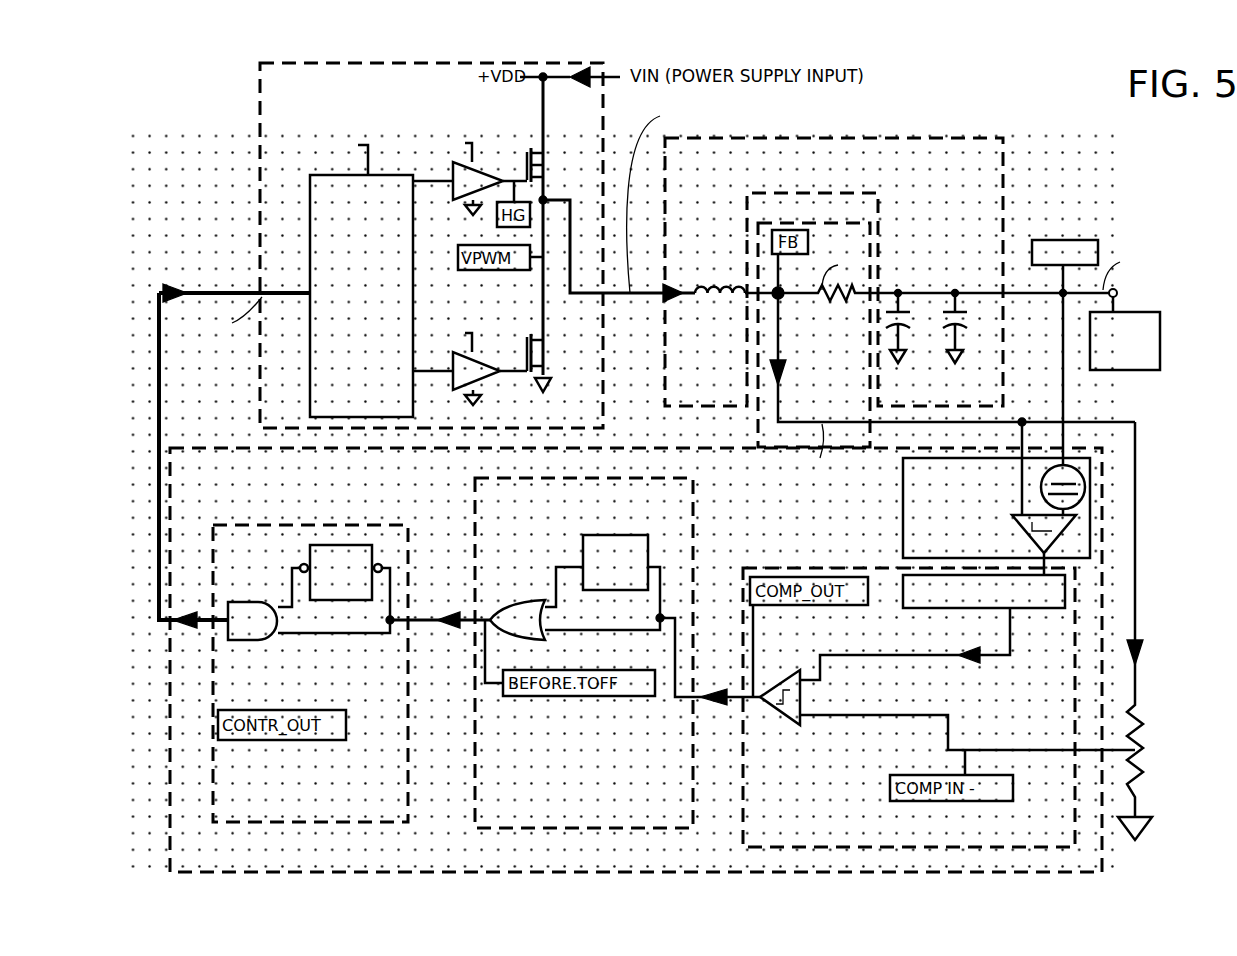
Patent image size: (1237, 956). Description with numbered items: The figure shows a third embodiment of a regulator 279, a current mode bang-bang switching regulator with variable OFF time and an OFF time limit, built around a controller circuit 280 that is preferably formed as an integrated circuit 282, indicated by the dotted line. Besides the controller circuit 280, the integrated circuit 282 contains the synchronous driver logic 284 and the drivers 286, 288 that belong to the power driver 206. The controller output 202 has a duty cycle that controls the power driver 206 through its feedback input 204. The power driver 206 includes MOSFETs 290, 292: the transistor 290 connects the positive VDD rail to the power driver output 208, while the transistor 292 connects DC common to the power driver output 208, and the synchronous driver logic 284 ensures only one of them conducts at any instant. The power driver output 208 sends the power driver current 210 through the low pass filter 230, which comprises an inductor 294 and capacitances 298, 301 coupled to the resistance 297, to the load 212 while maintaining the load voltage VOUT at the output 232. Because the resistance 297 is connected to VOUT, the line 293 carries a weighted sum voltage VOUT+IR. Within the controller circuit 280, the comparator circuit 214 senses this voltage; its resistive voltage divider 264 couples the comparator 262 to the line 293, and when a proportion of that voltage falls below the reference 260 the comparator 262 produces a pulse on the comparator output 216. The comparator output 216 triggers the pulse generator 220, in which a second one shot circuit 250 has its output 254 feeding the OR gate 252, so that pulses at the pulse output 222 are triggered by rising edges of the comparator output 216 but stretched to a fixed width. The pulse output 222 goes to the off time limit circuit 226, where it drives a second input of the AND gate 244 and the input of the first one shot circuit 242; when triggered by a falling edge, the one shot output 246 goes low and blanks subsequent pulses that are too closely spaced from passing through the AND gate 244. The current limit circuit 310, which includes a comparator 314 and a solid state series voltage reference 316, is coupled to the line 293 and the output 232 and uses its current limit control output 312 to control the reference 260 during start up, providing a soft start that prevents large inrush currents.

The regulator 279 is at (1115, 170).
The integrated circuit 282 is at (232, 125).
The power driver 206 is at (304, 93).
The synchronous driver logic 284 is at (378, 229).
The driver 286 is at (472, 214).
The driver 288 is at (478, 333).
The MOSFET 290 is at (530, 148).
The MOSFET 292 is at (540, 350).
The feedback input 204 is at (308, 296).
The power driver output 208 is at (632, 300).
The low pass filter 230 is at (846, 168).
The power driver current 210 is at (680, 265).
The inductor 294 is at (712, 298).
The resistance 297 is at (840, 300).
The line 293 is at (848, 420).
The capacitance 298 is at (900, 288).
The capacitance 301 is at (928, 340).
The load voltage output 232 is at (1022, 290).
The load 212 is at (1141, 352).
The controller circuit 280 is at (272, 450).
The off time limit circuit 226 is at (384, 678).
The first one shot circuit 242 is at (353, 544).
The output of the first one shot circuit 246 is at (298, 566).
The AND gate 244 is at (257, 642).
The controller output 202 is at (193, 628).
The pulse output 222 is at (443, 628).
The pulse generator 220 is at (617, 748).
The second one shot circuit 250 is at (600, 533).
The output of the second one shot circuit 254 is at (583, 568).
The OR gate 252 is at (527, 598).
The comparator output 216 is at (720, 700).
The comparator circuit 214 is at (872, 694).
The comparator 262 is at (778, 680).
The current limit circuit 310 is at (903, 512).
The solid state series voltage reference 316 is at (1087, 487).
The comparator 314 is at (1072, 532).
The current limit control output 312 is at (1090, 560).
The reference circuit 260 is at (902, 587).
The resistive voltage divider 264 is at (1140, 748).